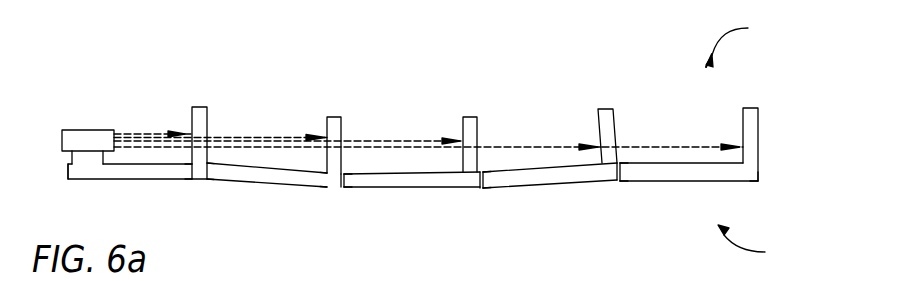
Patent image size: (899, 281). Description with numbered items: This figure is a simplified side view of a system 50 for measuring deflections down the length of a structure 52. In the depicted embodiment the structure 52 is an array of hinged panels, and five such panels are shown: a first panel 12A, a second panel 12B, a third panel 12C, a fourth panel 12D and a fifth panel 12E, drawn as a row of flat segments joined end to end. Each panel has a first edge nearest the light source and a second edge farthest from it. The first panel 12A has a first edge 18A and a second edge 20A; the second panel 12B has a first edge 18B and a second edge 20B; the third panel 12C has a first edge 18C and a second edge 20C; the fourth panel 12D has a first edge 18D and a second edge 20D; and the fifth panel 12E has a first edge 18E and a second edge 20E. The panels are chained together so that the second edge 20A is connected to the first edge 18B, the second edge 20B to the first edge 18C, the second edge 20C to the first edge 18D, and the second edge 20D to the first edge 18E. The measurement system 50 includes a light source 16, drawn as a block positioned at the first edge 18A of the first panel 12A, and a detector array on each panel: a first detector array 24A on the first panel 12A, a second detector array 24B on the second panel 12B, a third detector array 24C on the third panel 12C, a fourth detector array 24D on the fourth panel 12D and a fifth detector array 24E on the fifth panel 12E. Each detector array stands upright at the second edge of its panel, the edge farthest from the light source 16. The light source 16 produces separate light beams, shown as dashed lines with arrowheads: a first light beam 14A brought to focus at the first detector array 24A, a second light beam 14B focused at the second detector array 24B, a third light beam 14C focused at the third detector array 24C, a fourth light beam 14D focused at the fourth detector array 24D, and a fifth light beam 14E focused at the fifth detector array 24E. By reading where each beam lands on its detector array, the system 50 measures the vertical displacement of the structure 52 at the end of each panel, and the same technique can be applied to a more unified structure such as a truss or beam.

The first panel 12A is at (122, 180).
The second panel 12B is at (284, 183).
The third panel 12C is at (402, 188).
The fourth panel 12D is at (544, 187).
The fifth panel 12E is at (678, 184).
The first light beam 14A is at (152, 133).
The second light beam 14B is at (282, 137).
The third light beam 14C is at (390, 141).
The fourth light beam 14D is at (553, 146).
The fifth light beam 14E is at (705, 146).
The light source 16 is at (76, 130).
The first edge of first panel 18A is at (68, 170).
The first edge of second panel 18B is at (210, 171).
The first edge of third panel 18C is at (346, 184).
The first edge of fourth panel 18D is at (487, 180).
The first edge of fifth panel 18E is at (623, 178).
The second edge of first panel 20A is at (197, 171).
The second edge of second panel 20B is at (333, 185).
The second edge of third panel 20C is at (477, 180).
The second edge of fourth panel 20D is at (616, 178).
The second edge of fifth panel 20E is at (755, 177).
The first detector array 24A is at (203, 107).
The second detector array 24B is at (337, 117).
The third detector array 24C is at (472, 117).
The fourth detector array 24D is at (605, 109).
The fifth detector array 24E is at (755, 108).
The measurement system 50 is at (738, 43).
The structure 52 is at (752, 243).